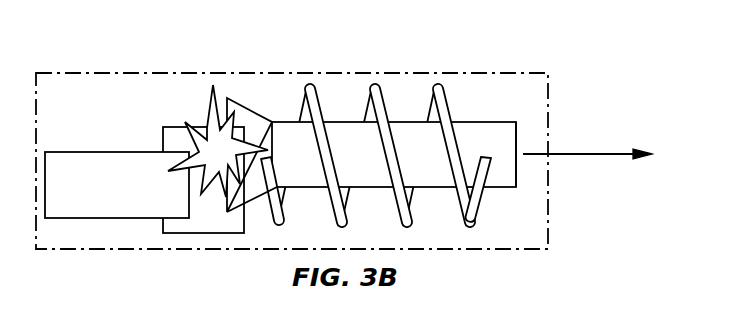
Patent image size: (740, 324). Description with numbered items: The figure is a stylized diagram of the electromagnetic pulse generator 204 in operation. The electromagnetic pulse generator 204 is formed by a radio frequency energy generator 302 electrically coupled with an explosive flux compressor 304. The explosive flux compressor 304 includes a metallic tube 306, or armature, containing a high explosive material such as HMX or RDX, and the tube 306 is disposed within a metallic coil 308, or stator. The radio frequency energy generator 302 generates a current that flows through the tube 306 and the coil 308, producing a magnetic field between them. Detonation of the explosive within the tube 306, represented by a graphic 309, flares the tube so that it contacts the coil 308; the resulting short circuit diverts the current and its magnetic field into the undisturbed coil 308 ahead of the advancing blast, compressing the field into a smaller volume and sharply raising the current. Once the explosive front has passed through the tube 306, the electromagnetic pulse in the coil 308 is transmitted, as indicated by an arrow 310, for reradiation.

The electromagnetic pulse generator 204 is at (550, 107).
The radio frequency energy generator 302 is at (69, 155).
The explosive flux compressor 304 is at (488, 93).
The metallic tube 306 is at (517, 170).
The metallic coil 308 is at (415, 166).
The graphic 309 is at (214, 92).
The arrow 310 is at (573, 153).